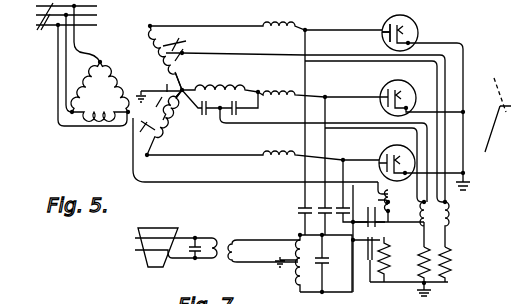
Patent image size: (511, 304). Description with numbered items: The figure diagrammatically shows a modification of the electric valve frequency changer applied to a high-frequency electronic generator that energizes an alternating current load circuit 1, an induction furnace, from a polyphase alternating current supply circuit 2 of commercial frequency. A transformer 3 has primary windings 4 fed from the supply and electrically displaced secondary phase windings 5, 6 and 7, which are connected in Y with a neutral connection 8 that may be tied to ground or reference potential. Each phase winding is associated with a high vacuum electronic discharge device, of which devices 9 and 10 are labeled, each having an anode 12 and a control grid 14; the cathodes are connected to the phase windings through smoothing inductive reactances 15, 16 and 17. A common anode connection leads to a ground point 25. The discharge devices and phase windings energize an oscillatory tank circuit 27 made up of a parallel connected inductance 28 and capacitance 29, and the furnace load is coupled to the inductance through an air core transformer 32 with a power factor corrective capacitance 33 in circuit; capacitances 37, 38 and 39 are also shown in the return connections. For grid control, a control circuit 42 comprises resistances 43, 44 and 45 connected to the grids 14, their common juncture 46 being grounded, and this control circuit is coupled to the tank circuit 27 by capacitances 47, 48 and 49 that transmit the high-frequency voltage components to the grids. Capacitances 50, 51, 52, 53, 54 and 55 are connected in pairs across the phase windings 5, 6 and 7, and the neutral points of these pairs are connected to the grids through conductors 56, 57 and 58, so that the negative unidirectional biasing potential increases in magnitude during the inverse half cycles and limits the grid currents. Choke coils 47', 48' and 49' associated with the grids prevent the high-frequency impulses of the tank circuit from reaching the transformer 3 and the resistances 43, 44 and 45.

The alternating current load circuit 1 is at (137, 232).
The polyphase alternating current supply circuit 2 is at (80, 64).
The transformer 3 is at (157, 77).
The primary windings 4 is at (100, 91).
The secondary phase winding 5 is at (152, 38).
The secondary phase winding 6 is at (224, 89).
The secondary phase winding 7 is at (164, 123).
The neutral connection 8 is at (181, 108).
The electronic discharge device 9 is at (418, 23).
The electronic discharge device 10 is at (416, 86).
The anode 12 is at (382, 30).
The control grid 14 is at (386, 42).
The smoothing inductive reactance 15 is at (282, 30).
The smoothing inductive reactance 16 is at (287, 92).
The smoothing inductive reactance 17 is at (284, 153).
The ground terminal 25 is at (469, 179).
The tank circuit 27 is at (326, 292).
The inductance 28 is at (284, 264).
The capacitance 29 is at (330, 266).
The air core transformer 32 is at (228, 240).
The capacitance 33 is at (194, 240).
The capacitor 37 is at (298, 211).
The capacitor 38 is at (324, 166).
The capacitor 39 is at (352, 191).
The control circuit 42 is at (427, 266).
The resistance 43 is at (448, 252).
The resistance 44 is at (418, 258).
The resistance 45 is at (382, 274).
The common juncture 46 is at (432, 291).
The capacitance 47 is at (366, 259).
The choke coil 47' is at (462, 224).
The capacitance 48 is at (355, 238).
The choke coil 48' is at (389, 224).
The capacitance 49 is at (369, 187).
The choke coil 49' is at (400, 204).
The capacitance 50 is at (184, 43).
The capacitance 51 is at (188, 58).
The capacitance 52 is at (240, 110).
The capacitance 53 is at (204, 118).
The capacitance 54 is at (159, 86).
The capacitance 55 is at (143, 150).
The conductor 56 is at (328, 60).
The conductor 57 is at (337, 124).
The conductor 58 is at (219, 184).